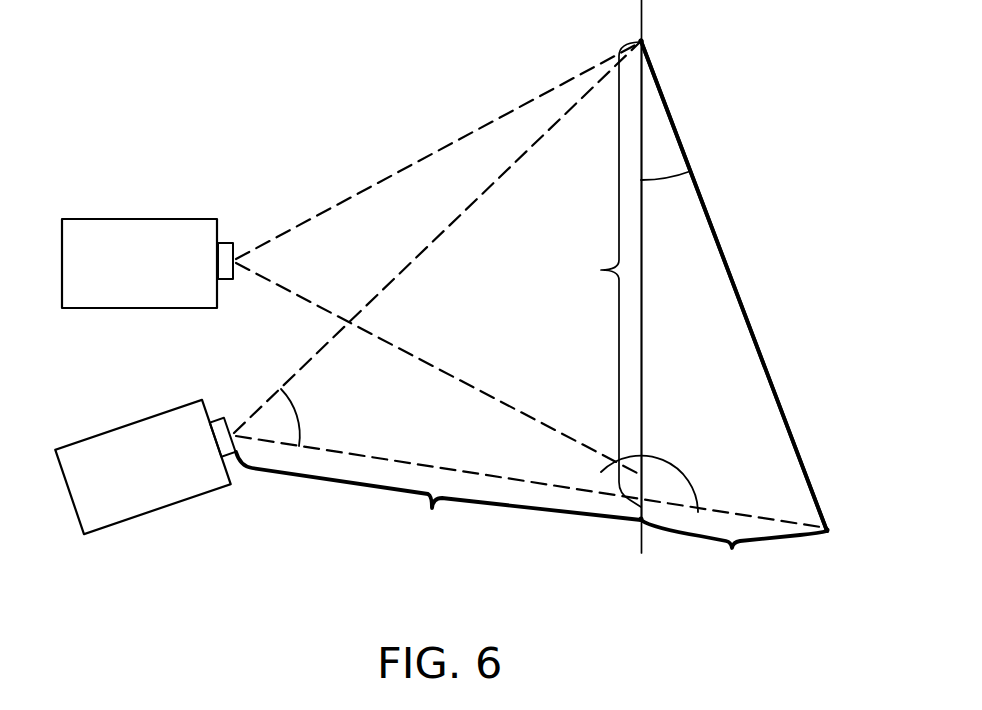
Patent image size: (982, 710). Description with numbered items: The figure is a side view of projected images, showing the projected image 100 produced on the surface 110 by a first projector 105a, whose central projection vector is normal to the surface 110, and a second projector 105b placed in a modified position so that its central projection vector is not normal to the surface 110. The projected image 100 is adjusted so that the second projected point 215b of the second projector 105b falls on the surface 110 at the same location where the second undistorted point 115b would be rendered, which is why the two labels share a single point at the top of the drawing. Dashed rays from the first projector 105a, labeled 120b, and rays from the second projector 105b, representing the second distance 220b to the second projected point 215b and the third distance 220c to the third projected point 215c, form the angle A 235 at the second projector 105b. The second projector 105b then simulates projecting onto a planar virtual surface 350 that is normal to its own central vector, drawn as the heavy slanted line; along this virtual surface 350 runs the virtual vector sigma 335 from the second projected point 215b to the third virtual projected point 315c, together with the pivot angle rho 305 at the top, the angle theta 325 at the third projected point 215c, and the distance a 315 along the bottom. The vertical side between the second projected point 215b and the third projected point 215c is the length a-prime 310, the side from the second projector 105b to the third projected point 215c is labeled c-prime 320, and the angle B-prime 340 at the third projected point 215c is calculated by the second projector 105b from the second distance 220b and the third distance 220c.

The projected image 100 is at (517, 99).
The first projector 105a is at (147, 263).
The second projector 105b is at (150, 464).
The surface 110 is at (642, 327).
The second undistorted point 115b is at (643, 41).
The second projected point 215b is at (666, 42).
The projection rays of first projector 120b is at (383, 175).
The second distance 220b is at (402, 266).
The third distance 220c is at (468, 468).
The angle A 235 is at (311, 417).
The length a' 310 is at (602, 280).
The pivot angle ρ 305 is at (666, 182).
The virtual vector σ 335 is at (717, 240).
The virtual surface 350 is at (759, 352).
The side c' 320 is at (438, 511).
The distance a 315 is at (734, 560).
The angle θ 325 is at (658, 471).
The angle B' 340 is at (601, 472).
The third projected point 215c is at (640, 518).
The third virtual projected point 315c is at (824, 546).